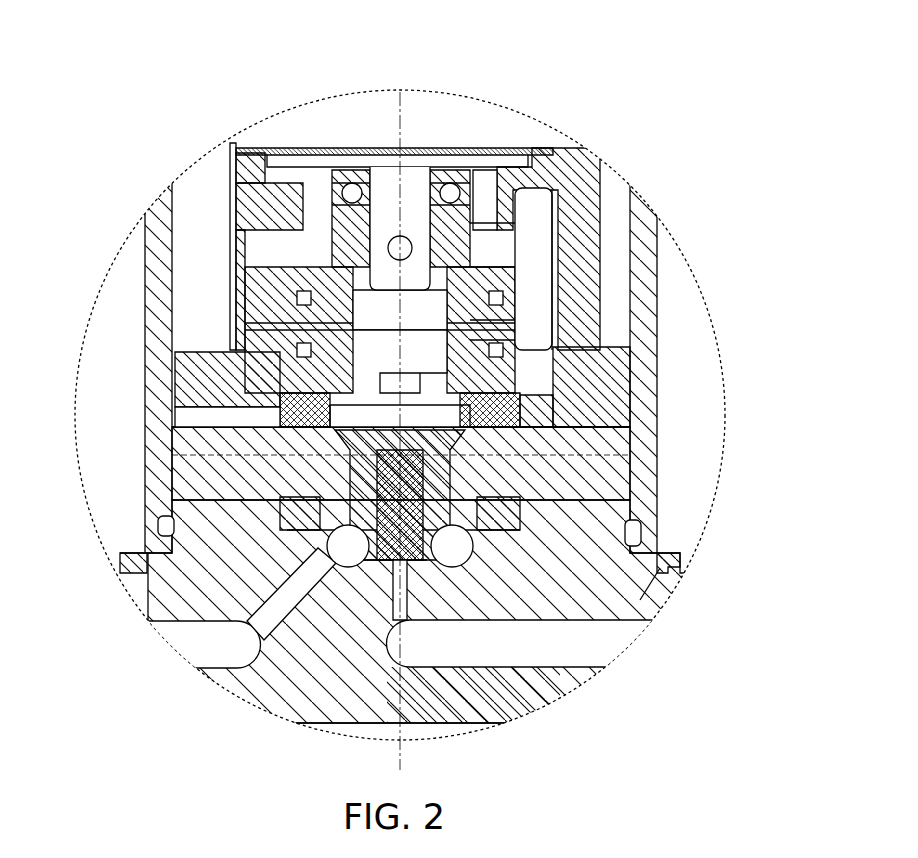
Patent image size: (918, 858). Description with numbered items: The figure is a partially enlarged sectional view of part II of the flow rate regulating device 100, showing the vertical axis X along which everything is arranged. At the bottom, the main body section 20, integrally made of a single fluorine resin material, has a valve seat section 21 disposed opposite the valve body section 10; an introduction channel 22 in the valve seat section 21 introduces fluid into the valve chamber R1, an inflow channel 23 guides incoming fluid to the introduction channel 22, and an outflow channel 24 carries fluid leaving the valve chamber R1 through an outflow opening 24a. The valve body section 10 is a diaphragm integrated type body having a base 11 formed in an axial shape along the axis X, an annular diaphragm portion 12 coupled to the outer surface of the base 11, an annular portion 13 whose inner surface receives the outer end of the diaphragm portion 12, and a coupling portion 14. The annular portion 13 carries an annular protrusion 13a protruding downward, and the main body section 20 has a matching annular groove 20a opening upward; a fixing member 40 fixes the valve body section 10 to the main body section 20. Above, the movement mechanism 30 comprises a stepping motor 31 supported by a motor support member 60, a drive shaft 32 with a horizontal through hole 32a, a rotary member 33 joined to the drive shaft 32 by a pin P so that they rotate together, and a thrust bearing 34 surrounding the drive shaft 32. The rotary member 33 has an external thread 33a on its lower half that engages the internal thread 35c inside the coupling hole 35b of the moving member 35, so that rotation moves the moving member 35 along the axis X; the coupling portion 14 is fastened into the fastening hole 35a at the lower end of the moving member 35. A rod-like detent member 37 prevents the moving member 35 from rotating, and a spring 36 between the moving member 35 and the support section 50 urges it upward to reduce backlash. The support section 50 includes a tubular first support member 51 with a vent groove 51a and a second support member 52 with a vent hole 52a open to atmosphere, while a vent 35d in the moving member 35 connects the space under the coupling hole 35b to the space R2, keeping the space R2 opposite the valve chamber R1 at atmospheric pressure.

The flow rate regulating device 100 is at (667, 118).
The valve body section 10 is at (338, 600).
The base 11 is at (554, 643).
The diaphragm portion 12 is at (600, 500).
The annular portion 13 is at (360, 505).
The annular protrusion 13a is at (330, 555).
The coupling portion 14 is at (380, 480).
The main body section 20 is at (665, 585).
The annular groove 20a is at (630, 600).
The valve seat section 21 is at (372, 600).
The introduction channel 22 is at (410, 640).
The inflow channel 23 is at (522, 680).
The outflow channel 24 is at (228, 650).
The outflow opening 24a is at (290, 640).
The movement mechanism 30 is at (240, 237).
The stepping motor 31 is at (509, 123).
The drive shaft 32 is at (412, 167).
The through hole 32a is at (413, 249).
The rotary member 33 is at (330, 232).
The external thread 33a is at (400, 313).
The thrust bearing 34 is at (353, 180).
The moving member 35 is at (255, 270).
The fastening hole 35a is at (400, 361).
The coupling hole 35b is at (546, 338).
The internal thread 35c is at (560, 388).
The vent 35d is at (280, 378).
The spring 36 is at (280, 350).
The detent member 37 is at (546, 300).
The fixing member 40 is at (600, 470).
The support section 50 is at (600, 430).
The first support member 51 is at (560, 415).
The vent groove 51a is at (300, 415).
The second support member 52 is at (590, 345).
The vent hole 52a is at (300, 410).
The motor support member 60 is at (572, 185).
The pin P is at (505, 226).
The valve chamber R1 is at (582, 655).
The space R2 is at (390, 460).
The axis X is at (415, 432).
The section line II is at (518, 757).